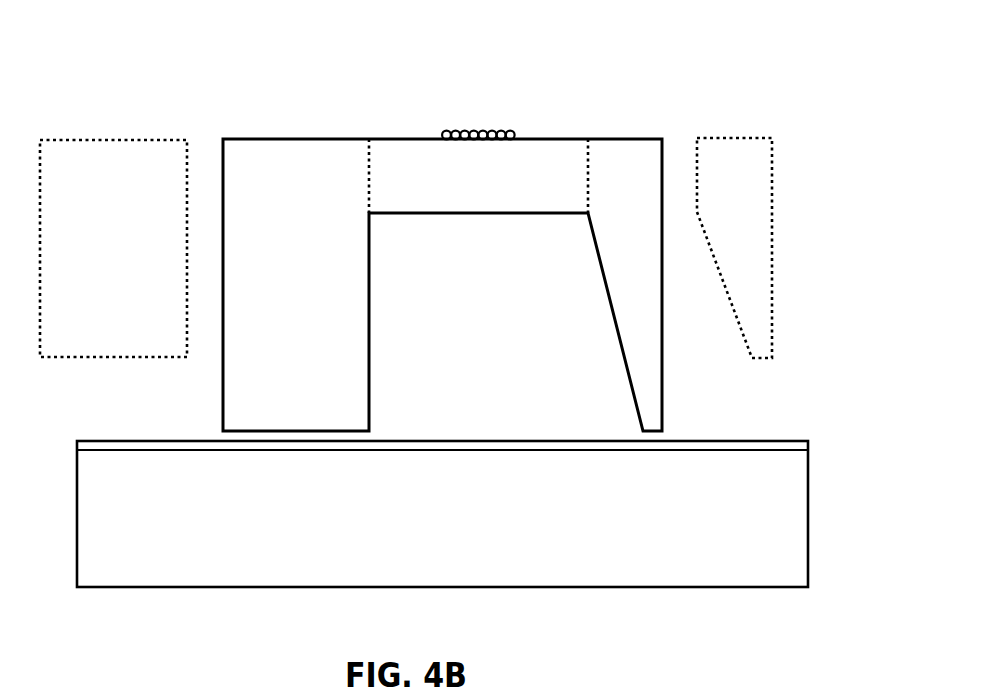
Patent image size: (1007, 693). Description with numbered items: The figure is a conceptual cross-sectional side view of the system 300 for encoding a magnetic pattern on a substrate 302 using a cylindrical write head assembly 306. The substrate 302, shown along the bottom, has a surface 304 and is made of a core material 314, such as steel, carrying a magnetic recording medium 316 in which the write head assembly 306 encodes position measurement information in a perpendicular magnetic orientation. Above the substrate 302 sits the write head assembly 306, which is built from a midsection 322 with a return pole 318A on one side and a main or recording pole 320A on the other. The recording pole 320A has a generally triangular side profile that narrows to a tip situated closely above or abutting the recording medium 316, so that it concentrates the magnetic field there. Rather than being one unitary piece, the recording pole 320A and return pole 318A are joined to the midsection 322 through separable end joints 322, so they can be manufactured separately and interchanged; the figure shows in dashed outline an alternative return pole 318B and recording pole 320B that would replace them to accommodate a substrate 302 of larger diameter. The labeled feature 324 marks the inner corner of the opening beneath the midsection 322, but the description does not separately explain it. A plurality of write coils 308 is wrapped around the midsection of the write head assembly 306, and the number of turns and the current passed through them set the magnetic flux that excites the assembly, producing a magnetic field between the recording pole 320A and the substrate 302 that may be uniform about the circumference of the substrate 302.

The system 300 is at (812, 72).
The substrate 302 is at (792, 370).
The surface 304 is at (95, 440).
The write head assembly 306 is at (630, 107).
The write coils 308 is at (500, 130).
The core material 314 is at (458, 529).
The magnetic recording medium 316 is at (733, 450).
The return pole 318A is at (320, 187).
The return pole 318B is at (157, 187).
The recording pole 320A is at (647, 187).
The recording pole 320B is at (757, 187).
The midsection 322 is at (495, 187).
The cavity 324 is at (371, 193).